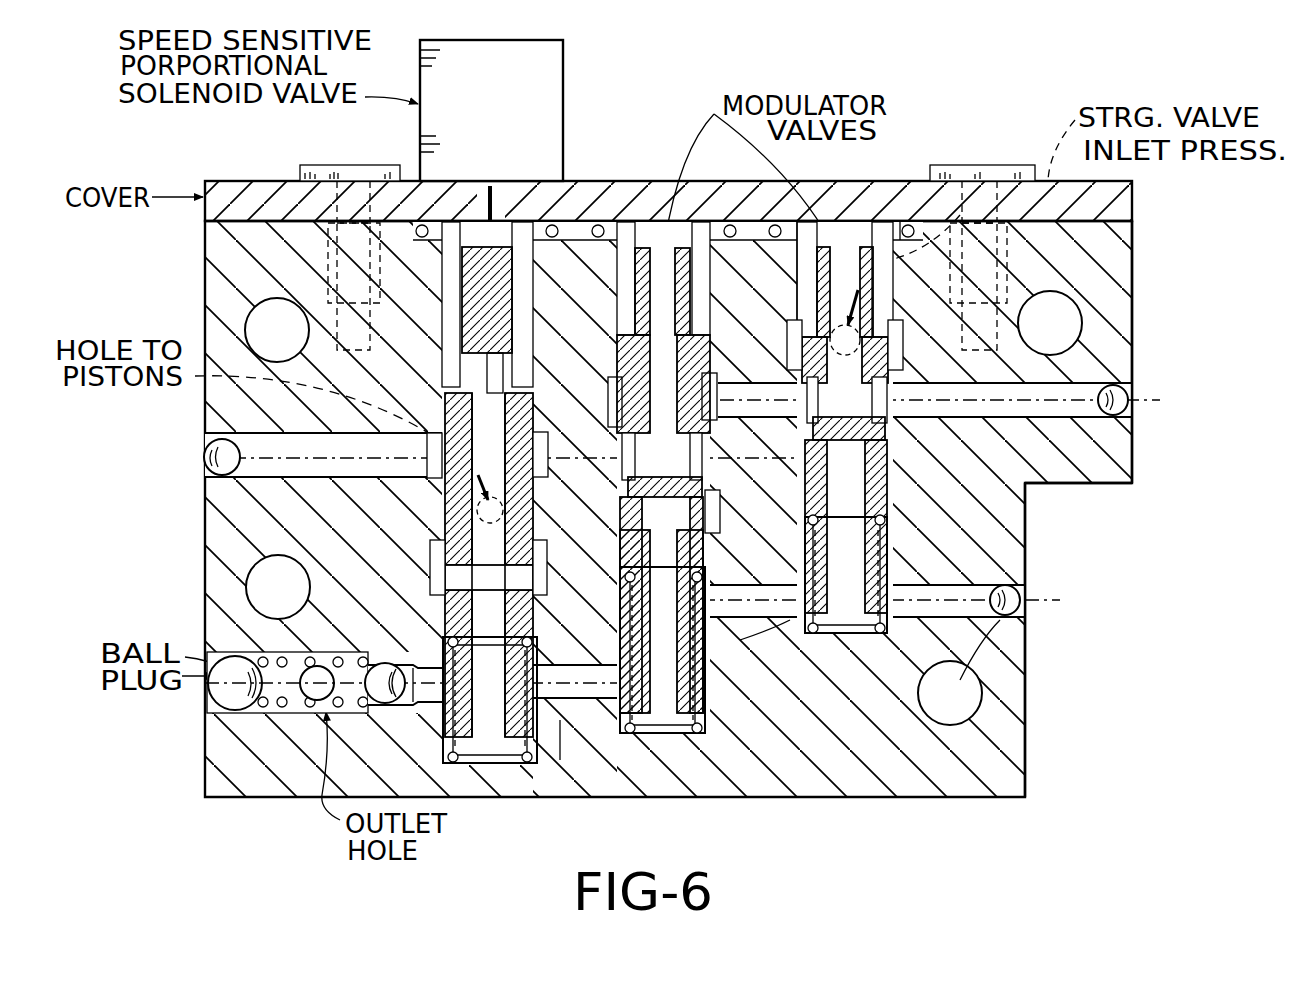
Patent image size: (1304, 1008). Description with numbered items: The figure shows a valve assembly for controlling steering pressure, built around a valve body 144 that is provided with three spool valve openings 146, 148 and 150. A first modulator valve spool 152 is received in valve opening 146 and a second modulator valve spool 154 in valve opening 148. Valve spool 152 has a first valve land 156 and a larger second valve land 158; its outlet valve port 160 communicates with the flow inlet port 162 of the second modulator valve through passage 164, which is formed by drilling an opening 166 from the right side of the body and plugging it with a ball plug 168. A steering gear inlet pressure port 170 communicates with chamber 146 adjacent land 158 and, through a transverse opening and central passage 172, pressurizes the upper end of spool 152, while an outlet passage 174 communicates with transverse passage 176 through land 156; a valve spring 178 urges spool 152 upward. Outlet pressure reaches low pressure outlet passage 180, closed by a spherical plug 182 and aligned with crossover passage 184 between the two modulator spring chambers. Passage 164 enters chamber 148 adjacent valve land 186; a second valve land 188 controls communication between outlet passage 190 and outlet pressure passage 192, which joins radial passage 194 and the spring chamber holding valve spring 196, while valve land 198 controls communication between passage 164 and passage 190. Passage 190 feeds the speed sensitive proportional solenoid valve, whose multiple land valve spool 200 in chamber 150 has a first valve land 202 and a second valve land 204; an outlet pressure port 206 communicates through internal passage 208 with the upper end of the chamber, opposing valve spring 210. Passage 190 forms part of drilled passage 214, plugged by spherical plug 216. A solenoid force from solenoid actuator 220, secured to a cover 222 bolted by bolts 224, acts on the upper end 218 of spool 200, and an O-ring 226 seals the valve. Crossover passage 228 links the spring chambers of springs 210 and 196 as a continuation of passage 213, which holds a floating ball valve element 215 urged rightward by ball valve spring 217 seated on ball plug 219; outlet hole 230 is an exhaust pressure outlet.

The valve body 144 is at (1110, 362).
The spool valve opening 146 is at (795, 235).
The spool valve opening 148 is at (625, 240).
The spool valve opening 150 is at (446, 222).
The first modulator valve spool 152 is at (905, 440).
The second modulator valve spool 154 is at (702, 540).
The first valve land 156 is at (900, 500).
The second valve land 158 is at (895, 320).
The outlet valve port 160 is at (800, 386).
The flow inlet port 162 is at (790, 420).
The passage 164 is at (805, 390).
The opening 166 is at (1030, 410).
The ball plug 168 is at (1130, 404).
The steering gear inlet pressure port 170 is at (930, 165).
The central passage 172 is at (855, 240).
The outlet passage 174 is at (880, 560).
The transverse passage 176 is at (849, 446).
The valve spring 178 is at (960, 640).
The low pressure outlet passage 180 is at (960, 640).
The spherical plug 182 is at (1028, 598).
The crossover passage 184 is at (745, 610).
The valve land 186 is at (618, 360).
The second valve land 188 is at (718, 510).
The outlet passage 190 is at (620, 420).
The outlet pressure passage 192 is at (530, 610).
The radial passage 194 is at (690, 526).
The valve spring 196 is at (690, 700).
The valve land 198 is at (608, 400).
The multiple land valve spool 200 is at (514, 400).
The first valve land 202 is at (446, 430).
The second valve land 204 is at (438, 560).
The outlet pressure port 206 is at (470, 505).
The internal passage 208 is at (480, 380).
The valve spring 210 is at (560, 700).
The passage 213 is at (432, 665).
The drilled passage 214 is at (300, 468).
The ball valve element 215 is at (405, 705).
The spherical plug 216 is at (212, 445).
The ball valve spring 217 is at (285, 650).
The upper end 218 is at (567, 181).
The ball plug 219 is at (222, 660).
The solenoid actuator 220 is at (550, 105).
The cover 222 is at (282, 181).
The bolts 224 is at (312, 165).
The O-ring 226 is at (422, 181).
The crossover passage 228 is at (580, 690).
The outlet hole 230 is at (310, 690).